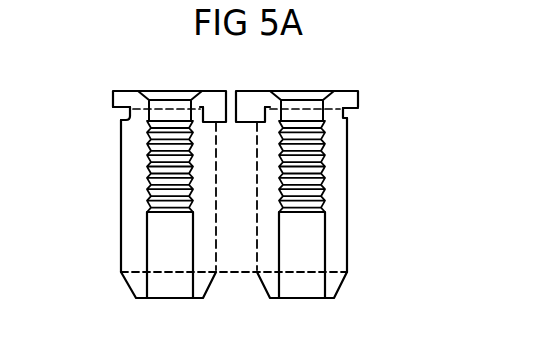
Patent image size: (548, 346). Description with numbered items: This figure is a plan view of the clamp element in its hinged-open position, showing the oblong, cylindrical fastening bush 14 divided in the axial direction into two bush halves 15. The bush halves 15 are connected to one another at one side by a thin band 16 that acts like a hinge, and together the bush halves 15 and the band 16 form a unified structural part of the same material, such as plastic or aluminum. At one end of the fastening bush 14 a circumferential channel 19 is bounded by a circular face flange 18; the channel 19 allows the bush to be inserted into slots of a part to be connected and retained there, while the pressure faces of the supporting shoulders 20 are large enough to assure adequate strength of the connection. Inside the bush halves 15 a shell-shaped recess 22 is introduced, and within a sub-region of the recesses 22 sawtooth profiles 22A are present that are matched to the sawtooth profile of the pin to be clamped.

The fastening bush 14 is at (352, 162).
The bush halves 15 is at (140, 223).
The band 16 is at (247, 262).
The face flange 18 is at (111, 91).
The channel 19 is at (126, 108).
The supporting shoulders 20 is at (121, 131).
The recess 22 is at (162, 254).
The sawtooth profiles 22A is at (303, 184).